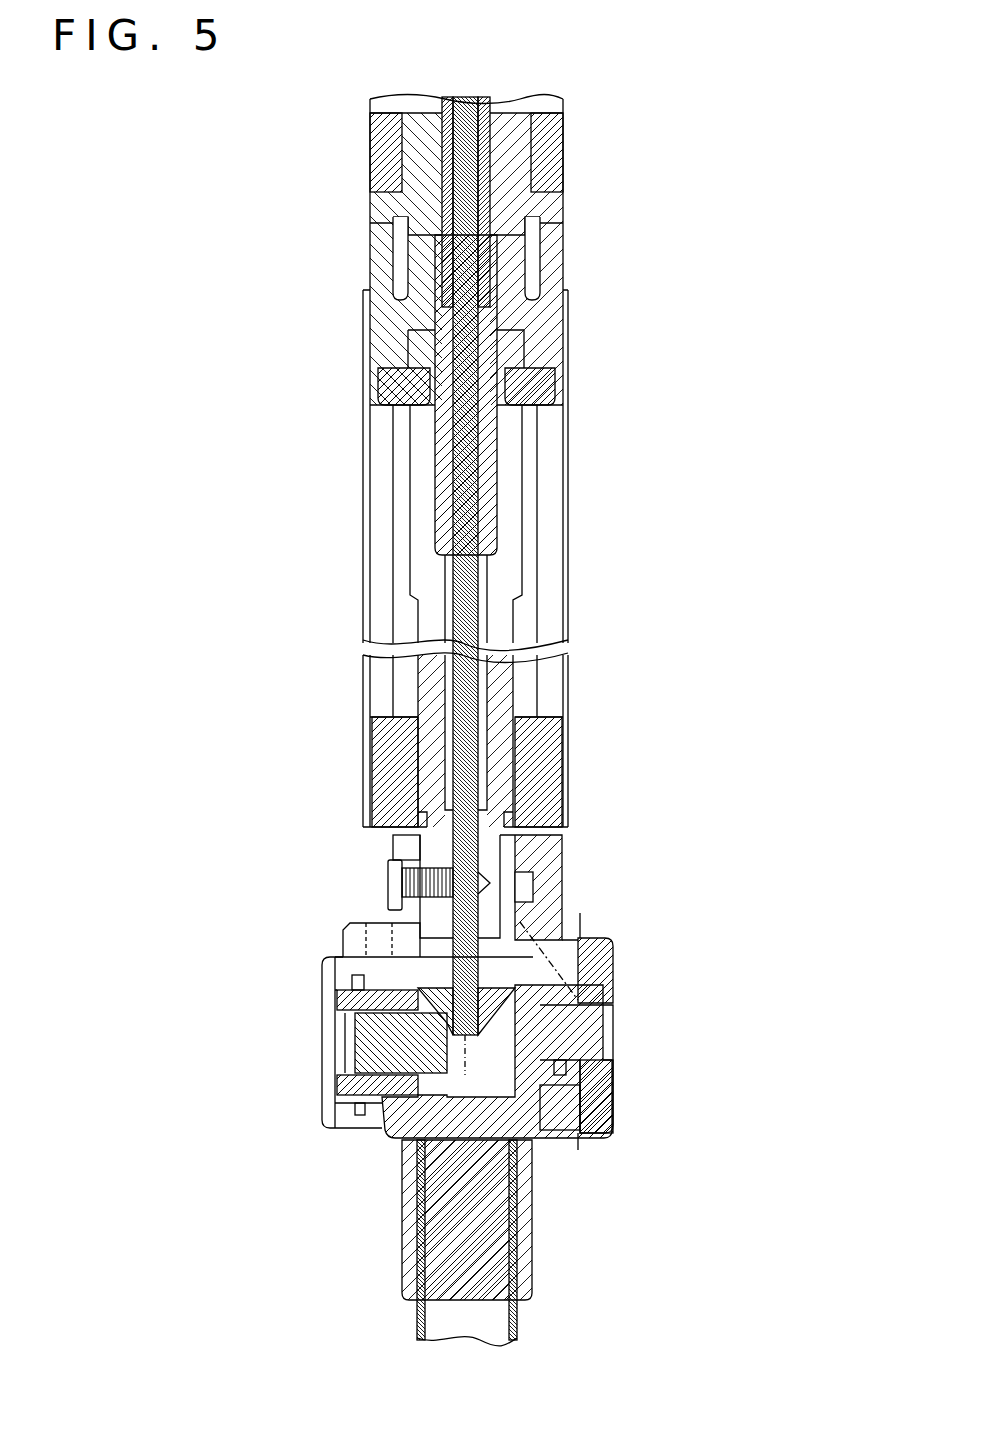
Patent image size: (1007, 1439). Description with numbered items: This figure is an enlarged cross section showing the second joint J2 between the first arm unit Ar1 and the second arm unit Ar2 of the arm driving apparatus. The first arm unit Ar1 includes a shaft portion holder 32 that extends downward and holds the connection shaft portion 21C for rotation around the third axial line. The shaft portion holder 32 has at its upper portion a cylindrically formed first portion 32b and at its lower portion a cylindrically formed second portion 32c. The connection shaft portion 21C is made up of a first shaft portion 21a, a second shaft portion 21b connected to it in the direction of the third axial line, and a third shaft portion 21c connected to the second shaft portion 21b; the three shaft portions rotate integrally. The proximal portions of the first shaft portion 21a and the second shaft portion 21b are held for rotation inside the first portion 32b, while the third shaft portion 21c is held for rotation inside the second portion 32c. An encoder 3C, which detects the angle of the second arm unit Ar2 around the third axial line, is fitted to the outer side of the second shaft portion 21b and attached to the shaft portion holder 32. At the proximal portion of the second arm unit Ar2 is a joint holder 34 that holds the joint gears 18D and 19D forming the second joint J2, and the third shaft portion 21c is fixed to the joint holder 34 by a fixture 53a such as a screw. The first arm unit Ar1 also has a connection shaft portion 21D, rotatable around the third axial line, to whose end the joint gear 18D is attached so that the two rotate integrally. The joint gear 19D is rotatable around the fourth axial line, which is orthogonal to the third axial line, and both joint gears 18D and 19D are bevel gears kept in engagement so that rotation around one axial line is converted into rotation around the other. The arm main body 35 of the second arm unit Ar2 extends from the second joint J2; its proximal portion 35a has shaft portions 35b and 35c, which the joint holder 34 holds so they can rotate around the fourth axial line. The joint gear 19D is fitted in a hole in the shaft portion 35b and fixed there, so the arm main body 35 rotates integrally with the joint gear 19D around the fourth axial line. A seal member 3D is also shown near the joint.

The shaft portion holder 32 is at (366, 197).
The first portion 32b is at (372, 250).
The second portion 32c is at (378, 765).
The encoder 3C is at (385, 392).
The seal member 3D is at (598, 950).
The first shaft portion 21a is at (497, 178).
The second shaft portion 21b is at (492, 390).
The third shaft portion 21c is at (500, 613).
The connection shaft portion 21C is at (618, 176).
The connection shaft portion 21D is at (440, 522).
The fixture 53a is at (392, 884).
The joint holder 34 is at (355, 932).
The joint gear 18D is at (437, 980).
The joint gear 19D is at (378, 1087).
The arm main body 35 is at (517, 1318).
The proximal portion 35a is at (490, 1248).
The shaft portion 35b is at (338, 1080).
The shaft portion 35c is at (590, 1027).
The second joint J2 is at (318, 1127).
The first arm unit Ar1 is at (570, 136).
The second arm unit Ar2 is at (551, 1184).